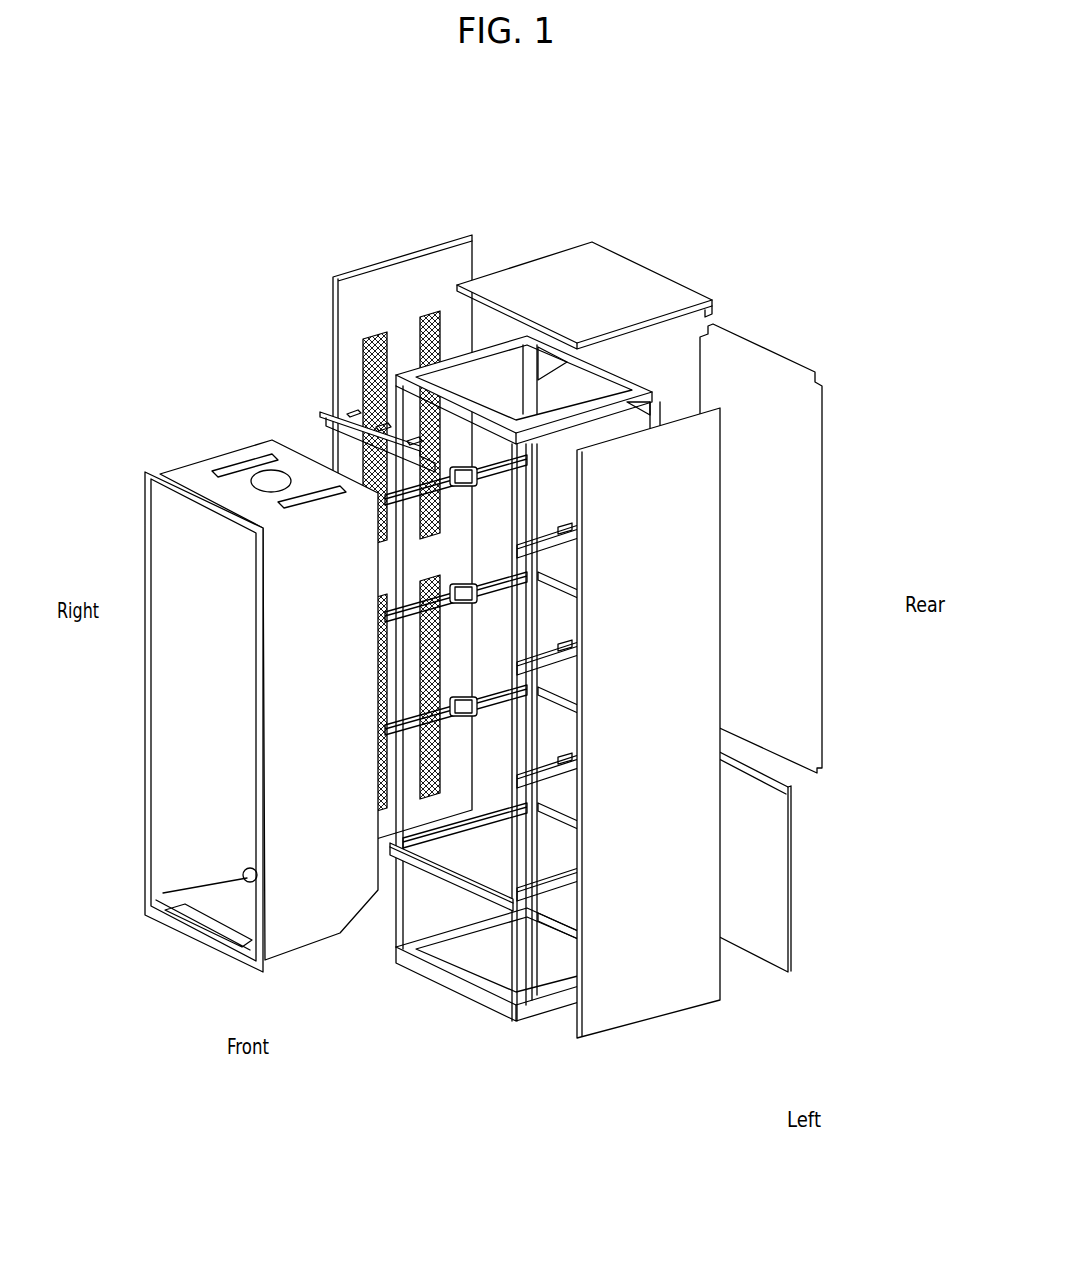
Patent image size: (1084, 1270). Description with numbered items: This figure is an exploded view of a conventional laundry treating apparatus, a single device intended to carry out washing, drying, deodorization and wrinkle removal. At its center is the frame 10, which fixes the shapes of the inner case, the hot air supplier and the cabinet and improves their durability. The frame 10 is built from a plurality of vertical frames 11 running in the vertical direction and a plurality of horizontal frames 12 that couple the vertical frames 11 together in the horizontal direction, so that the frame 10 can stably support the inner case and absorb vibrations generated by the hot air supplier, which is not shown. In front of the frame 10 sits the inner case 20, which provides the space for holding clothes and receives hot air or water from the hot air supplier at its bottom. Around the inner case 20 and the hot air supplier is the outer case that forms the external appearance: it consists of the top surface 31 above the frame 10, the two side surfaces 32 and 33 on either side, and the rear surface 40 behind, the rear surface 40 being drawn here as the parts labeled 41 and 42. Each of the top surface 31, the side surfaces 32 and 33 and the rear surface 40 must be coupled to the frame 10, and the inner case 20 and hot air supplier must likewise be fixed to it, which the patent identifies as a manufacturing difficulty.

The frame 10 is at (175, 229).
The vertical frames 11 is at (513, 977).
The horizontal frames 12 is at (540, 895).
The inner case 20 is at (145, 679).
The top surface 31 is at (541, 272).
The side surface 32 is at (677, 614).
The side surface 33 is at (358, 287).
The rear surface 40 is at (817, 648).
The upper rear panel 41 is at (805, 698).
The lower rear panel 42 is at (791, 857).